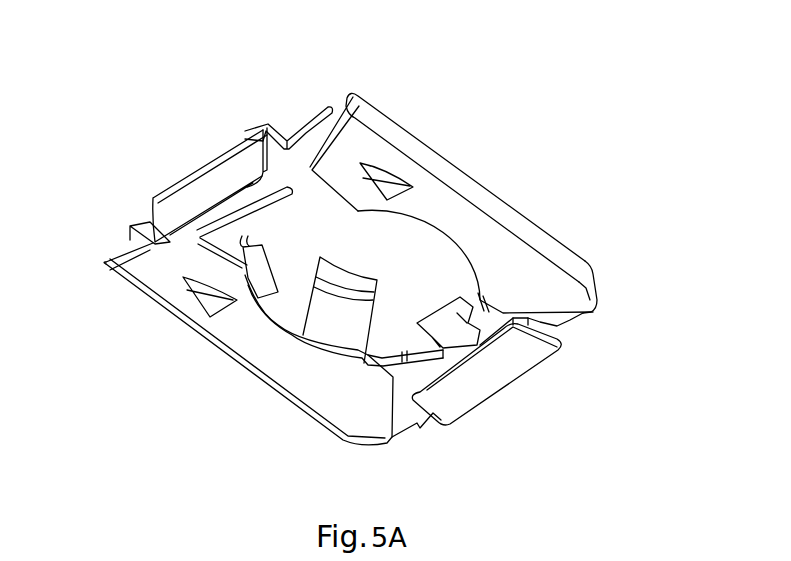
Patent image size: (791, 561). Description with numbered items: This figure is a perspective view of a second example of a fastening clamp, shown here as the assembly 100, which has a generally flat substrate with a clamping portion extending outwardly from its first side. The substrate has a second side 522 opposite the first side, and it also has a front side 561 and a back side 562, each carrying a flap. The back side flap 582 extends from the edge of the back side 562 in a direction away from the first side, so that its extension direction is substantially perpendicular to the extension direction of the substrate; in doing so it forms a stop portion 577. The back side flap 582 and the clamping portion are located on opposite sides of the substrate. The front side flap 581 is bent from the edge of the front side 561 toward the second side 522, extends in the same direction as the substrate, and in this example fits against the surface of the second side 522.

The electrical connector assembly 100 is at (364, 224).
The second side 522 is at (450, 220).
The back side 562 is at (270, 122).
The back side flap 582 is at (197, 185).
The stop portion 577 is at (168, 300).
The front side 561 is at (597, 313).
The front side flap 581 is at (480, 383).